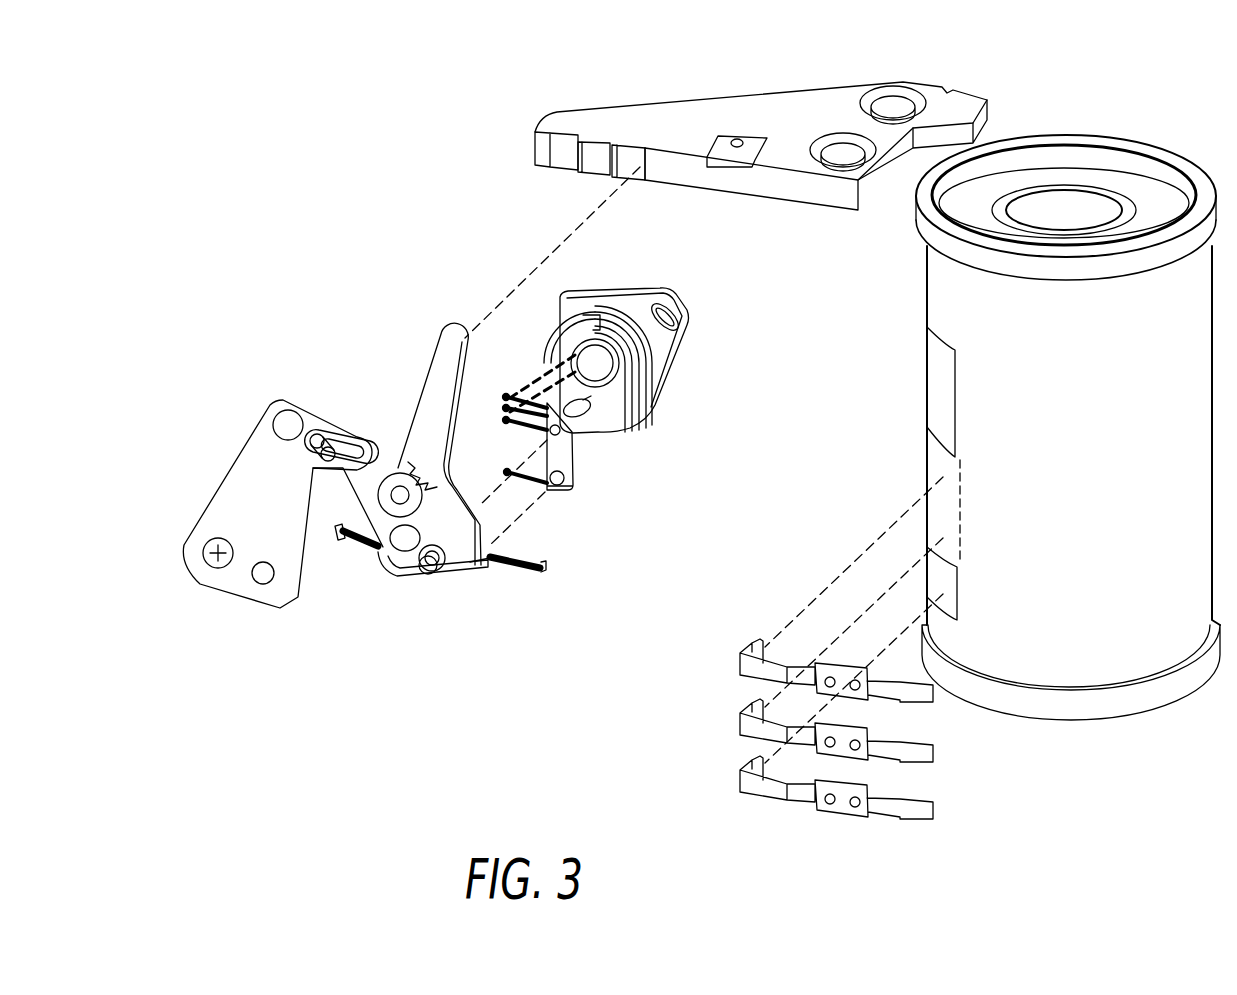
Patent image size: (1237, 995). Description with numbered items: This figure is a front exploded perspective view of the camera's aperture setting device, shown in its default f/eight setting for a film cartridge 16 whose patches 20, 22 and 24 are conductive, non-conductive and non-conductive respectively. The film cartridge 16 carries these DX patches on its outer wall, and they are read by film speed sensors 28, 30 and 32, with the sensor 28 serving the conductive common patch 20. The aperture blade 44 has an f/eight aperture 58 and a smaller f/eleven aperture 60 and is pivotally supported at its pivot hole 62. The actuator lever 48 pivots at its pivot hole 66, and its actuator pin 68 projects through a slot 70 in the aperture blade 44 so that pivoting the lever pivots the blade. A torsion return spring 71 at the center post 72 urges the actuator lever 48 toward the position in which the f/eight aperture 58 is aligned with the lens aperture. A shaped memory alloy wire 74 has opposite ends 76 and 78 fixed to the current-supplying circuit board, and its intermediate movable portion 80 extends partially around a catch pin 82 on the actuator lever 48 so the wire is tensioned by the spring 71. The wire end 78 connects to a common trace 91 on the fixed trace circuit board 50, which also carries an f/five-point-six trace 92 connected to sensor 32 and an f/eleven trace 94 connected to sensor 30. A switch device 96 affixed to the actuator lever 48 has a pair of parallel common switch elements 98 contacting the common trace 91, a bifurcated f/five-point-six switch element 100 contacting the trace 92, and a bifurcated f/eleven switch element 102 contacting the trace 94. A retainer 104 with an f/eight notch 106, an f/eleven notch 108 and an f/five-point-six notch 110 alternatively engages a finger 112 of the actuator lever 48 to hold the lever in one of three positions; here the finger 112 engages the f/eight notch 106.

The film cartridge 16 is at (1096, 133).
The patch 20 is at (957, 584).
The patch 22 is at (955, 543).
The patch 24 is at (955, 490).
The film speed sensor 28 is at (750, 780).
The film speed sensor 30 is at (740, 722).
The film speed sensor 32 is at (740, 663).
The aperture blade 44 is at (256, 620).
The actuator lever 48 is at (424, 385).
The trace circuit board 50 is at (693, 337).
The f/8 aperture 58 is at (223, 540).
The f/11 aperture 60 is at (272, 579).
The pivot hole 62 is at (280, 417).
The pivot hole 66 is at (416, 533).
The actuator pin 68 is at (340, 443).
The slot 70 is at (318, 434).
The torsion return spring 71 is at (415, 467).
The center post 72 is at (390, 496).
The SMA wire 74 is at (487, 583).
The wire end 76 is at (517, 573).
The wire end 78 is at (352, 548).
The intermediate movable portion 80 is at (472, 577).
The catch pin 82 is at (428, 570).
The common trace 91 is at (556, 363).
The f/5.6 trace 92 is at (590, 327).
The f/11 trace 94 is at (590, 315).
The switch device 96 is at (580, 489).
The common switch elements 98 is at (510, 472).
The f/5.6 switch element 100 is at (507, 397).
The f/11 switch element 102 is at (512, 408).
The retainer 104 is at (757, 92).
The f/8 notch 106 is at (637, 155).
The f/11 notch 108 is at (603, 153).
The f/5.6 notch 110 is at (570, 147).
The finger 112 is at (445, 338).